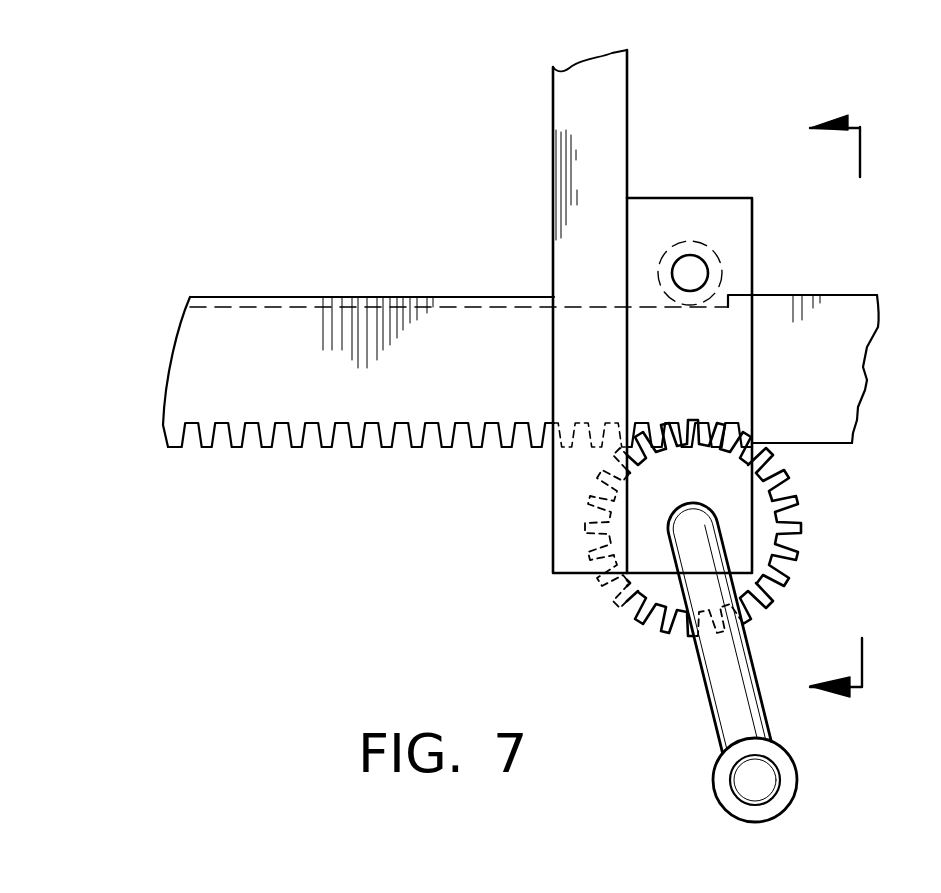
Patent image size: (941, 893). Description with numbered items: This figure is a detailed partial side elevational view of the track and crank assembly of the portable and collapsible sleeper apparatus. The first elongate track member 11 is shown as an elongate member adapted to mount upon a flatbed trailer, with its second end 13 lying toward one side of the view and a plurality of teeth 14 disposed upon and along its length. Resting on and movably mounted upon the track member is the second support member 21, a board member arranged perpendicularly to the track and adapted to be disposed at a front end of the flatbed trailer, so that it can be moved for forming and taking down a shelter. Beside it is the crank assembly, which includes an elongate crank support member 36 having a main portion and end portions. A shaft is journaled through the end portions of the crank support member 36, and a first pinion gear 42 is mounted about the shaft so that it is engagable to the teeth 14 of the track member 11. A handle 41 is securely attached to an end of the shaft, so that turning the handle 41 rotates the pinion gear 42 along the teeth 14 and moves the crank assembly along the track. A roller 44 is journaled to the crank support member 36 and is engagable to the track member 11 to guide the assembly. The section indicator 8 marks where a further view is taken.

The first elongate track member 11 is at (265, 322).
The second end 13 is at (538, 405).
The teeth 14 is at (390, 447).
The second support member 21 is at (578, 103).
The elongate crank support member 36 is at (727, 367).
The roller 44 is at (690, 268).
The first pinion gear 42 is at (620, 612).
The handle 41 is at (740, 672).
The section line for FIG. 8 is at (857, 413).